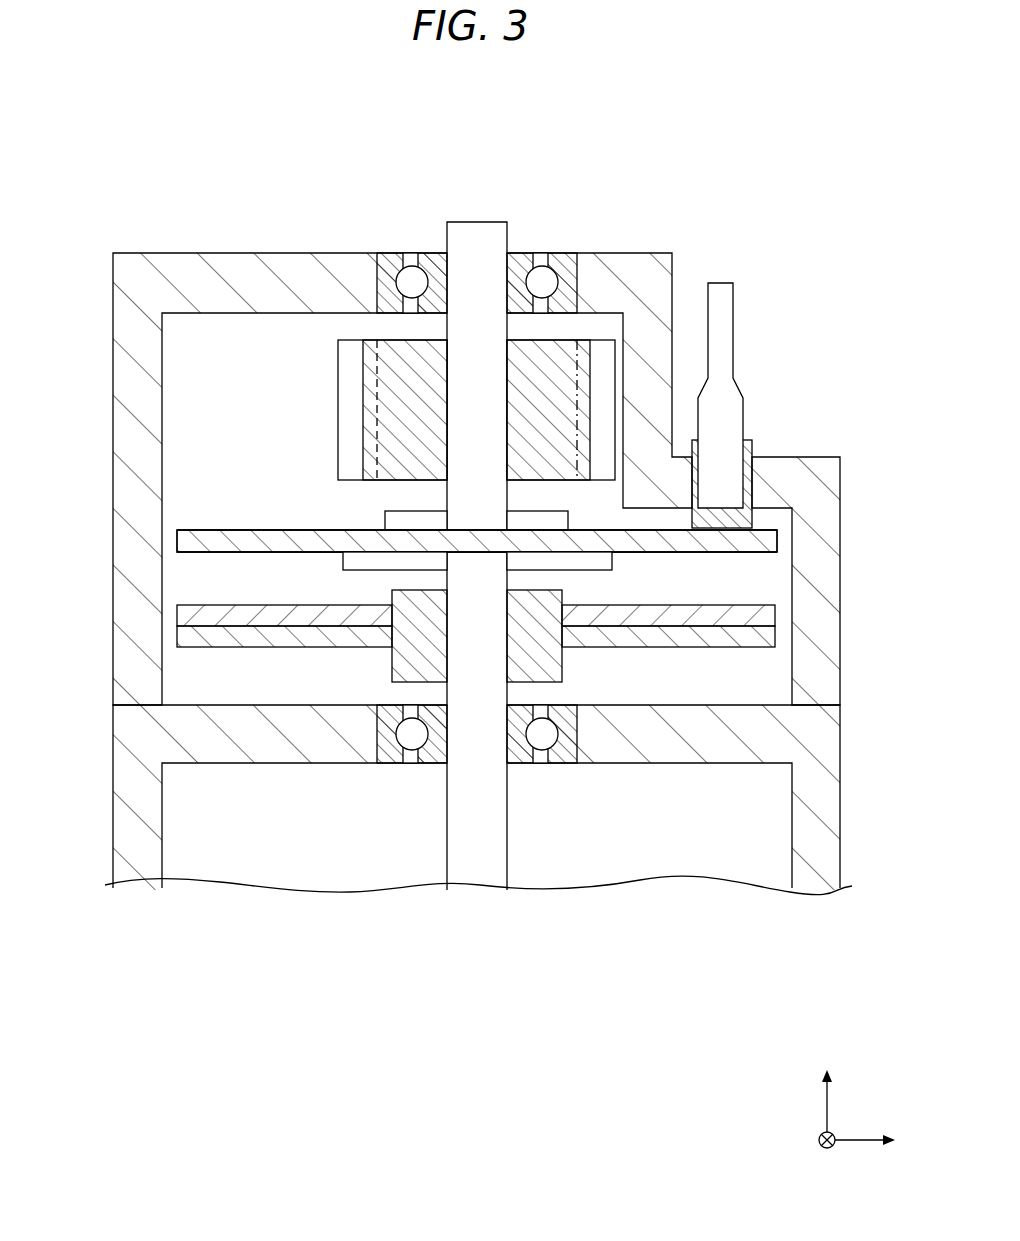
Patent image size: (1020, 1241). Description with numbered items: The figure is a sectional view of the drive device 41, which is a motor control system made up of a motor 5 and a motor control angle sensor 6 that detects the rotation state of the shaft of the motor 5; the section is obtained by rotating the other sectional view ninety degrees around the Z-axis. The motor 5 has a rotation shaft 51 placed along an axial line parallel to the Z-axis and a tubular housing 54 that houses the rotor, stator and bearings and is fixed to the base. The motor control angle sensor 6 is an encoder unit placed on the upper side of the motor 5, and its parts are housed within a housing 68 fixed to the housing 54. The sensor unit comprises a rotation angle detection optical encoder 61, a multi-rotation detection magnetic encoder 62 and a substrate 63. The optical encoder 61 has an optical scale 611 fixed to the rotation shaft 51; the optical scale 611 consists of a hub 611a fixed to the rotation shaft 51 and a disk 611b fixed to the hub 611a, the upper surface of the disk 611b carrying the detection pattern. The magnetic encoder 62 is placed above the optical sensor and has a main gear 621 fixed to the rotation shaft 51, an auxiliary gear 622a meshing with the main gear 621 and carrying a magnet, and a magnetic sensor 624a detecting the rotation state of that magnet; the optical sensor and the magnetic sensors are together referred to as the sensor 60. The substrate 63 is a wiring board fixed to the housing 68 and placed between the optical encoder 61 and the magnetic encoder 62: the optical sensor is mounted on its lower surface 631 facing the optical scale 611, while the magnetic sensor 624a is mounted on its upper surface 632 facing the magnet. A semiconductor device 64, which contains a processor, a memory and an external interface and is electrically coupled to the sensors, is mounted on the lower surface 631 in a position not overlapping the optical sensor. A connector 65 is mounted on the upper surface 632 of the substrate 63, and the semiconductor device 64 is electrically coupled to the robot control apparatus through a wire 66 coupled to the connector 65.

The drive device 41 is at (733, 146).
The motor 5 is at (108, 775).
The housing 54 is at (263, 740).
The motor control angle sensor 6 is at (108, 375).
The housing 68 is at (178, 275).
The magnetic encoder 62 is at (313, 352).
The main gear 621 is at (393, 362).
The auxiliary gear 622a is at (590, 364).
The magnetic sensor 624a is at (398, 520).
The sensor 60 is at (476, 520).
The substrate 63 is at (243, 528).
The lower surface 631 is at (222, 553).
The upper surface 632 is at (280, 528).
The semiconductor device 64 is at (353, 562).
The optical encoder 61 is at (694, 668).
The optical scale 611 is at (735, 974).
The hub 611a is at (602, 640).
The disk 611b is at (662, 615).
The connector 65 is at (732, 520).
The wire 66 is at (720, 318).
The rotation shaft 51 is at (478, 825).